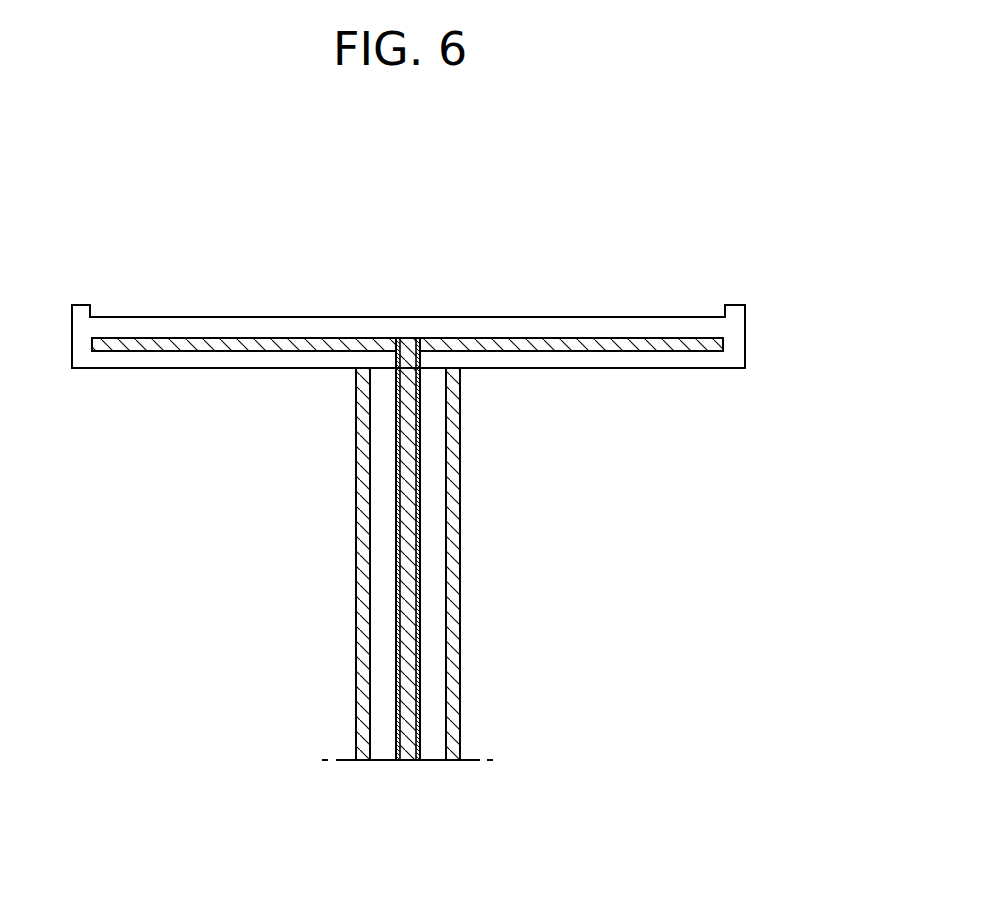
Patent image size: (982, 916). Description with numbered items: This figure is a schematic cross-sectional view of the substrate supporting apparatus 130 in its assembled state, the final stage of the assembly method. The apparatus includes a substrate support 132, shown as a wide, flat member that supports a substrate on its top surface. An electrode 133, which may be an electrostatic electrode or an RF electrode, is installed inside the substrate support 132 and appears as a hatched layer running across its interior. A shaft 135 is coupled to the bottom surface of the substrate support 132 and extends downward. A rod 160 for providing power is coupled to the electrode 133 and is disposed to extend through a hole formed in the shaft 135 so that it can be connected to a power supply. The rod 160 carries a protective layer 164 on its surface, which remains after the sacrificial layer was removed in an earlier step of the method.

The substrate supporting apparatus 130 is at (753, 235).
The substrate support 132 is at (737, 330).
The electrode 133 is at (640, 348).
The shaft 135 is at (448, 504).
The rod 160 is at (408, 565).
The protective layer 164 is at (420, 625).